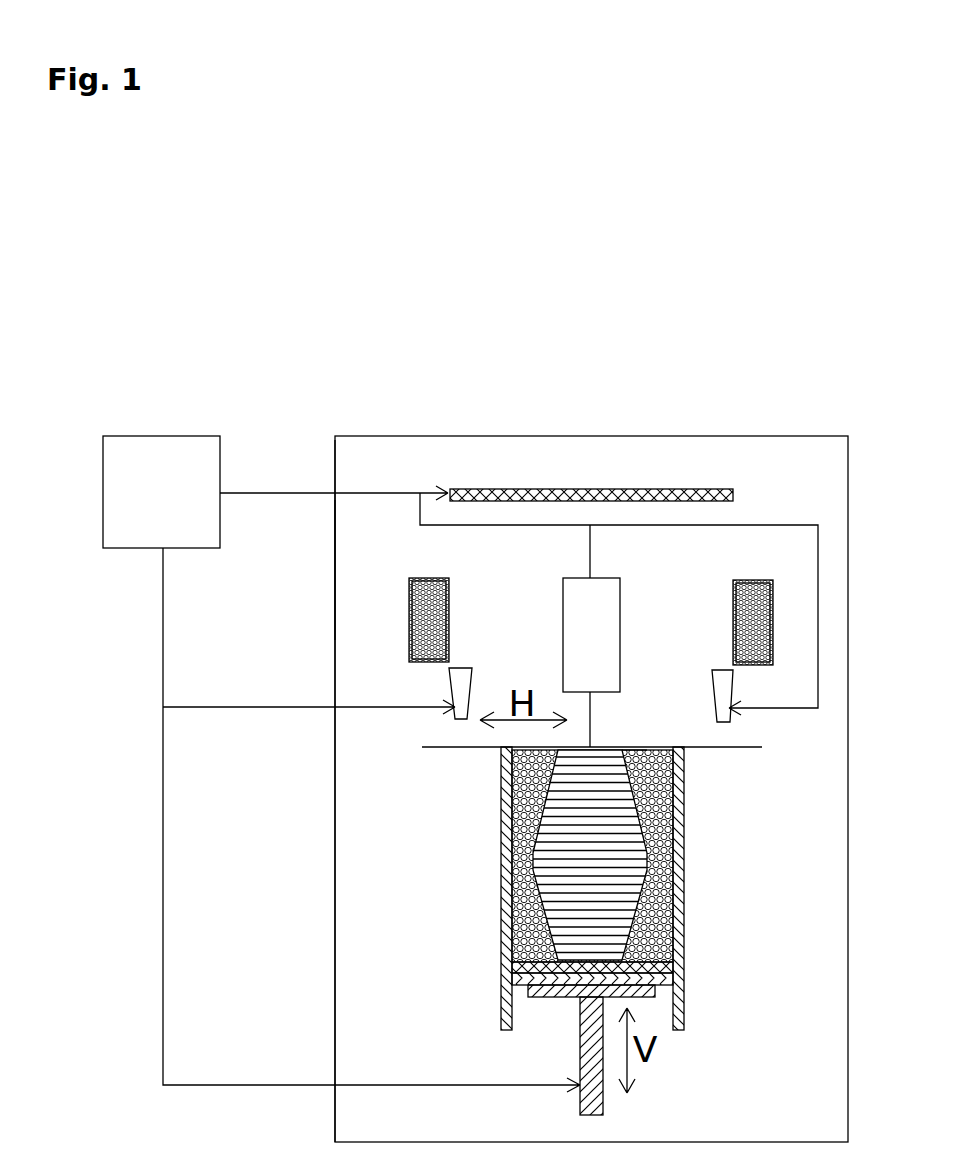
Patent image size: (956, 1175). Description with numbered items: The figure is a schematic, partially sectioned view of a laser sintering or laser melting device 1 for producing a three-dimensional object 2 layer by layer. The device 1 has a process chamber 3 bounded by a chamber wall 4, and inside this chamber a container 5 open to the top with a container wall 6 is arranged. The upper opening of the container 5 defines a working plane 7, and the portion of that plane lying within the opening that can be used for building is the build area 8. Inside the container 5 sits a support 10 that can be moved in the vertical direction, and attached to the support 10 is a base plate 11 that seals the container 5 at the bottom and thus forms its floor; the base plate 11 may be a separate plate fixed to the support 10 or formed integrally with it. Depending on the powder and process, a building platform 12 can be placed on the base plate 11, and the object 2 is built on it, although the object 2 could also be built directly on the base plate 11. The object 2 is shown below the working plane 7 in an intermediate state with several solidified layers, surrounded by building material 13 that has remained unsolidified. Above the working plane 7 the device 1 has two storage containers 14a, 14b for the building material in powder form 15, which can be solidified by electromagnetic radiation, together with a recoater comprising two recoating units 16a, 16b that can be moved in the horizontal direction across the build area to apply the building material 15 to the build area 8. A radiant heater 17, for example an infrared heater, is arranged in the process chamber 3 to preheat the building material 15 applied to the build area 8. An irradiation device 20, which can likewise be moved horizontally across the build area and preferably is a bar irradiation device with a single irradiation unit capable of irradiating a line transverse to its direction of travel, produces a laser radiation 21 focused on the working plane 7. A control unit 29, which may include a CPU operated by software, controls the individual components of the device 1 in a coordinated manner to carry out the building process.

The laser sintering device 1 is at (795, 403).
The object 2 is at (608, 804).
The process chamber 3 is at (415, 870).
The chamber wall 4 is at (335, 578).
The container 5 is at (696, 950).
The container wall 6 is at (684, 888).
The working plane 7 is at (718, 750).
The build area 8 is at (637, 748).
The support 10 is at (570, 997).
The base plate 11 is at (512, 993).
The building platform 12 is at (520, 967).
The building material 13 is at (500, 790).
The storage container 14a is at (753, 580).
The storage container 14b is at (428, 578).
The building material in powder form 15 is at (451, 620).
The recoating unit 16a is at (728, 712).
The recoating unit 16b is at (459, 690).
The radiant heater 17 is at (700, 490).
The irradiation device 20 is at (592, 602).
The laser radiation 21 is at (600, 703).
The control unit 29 is at (341, 764).